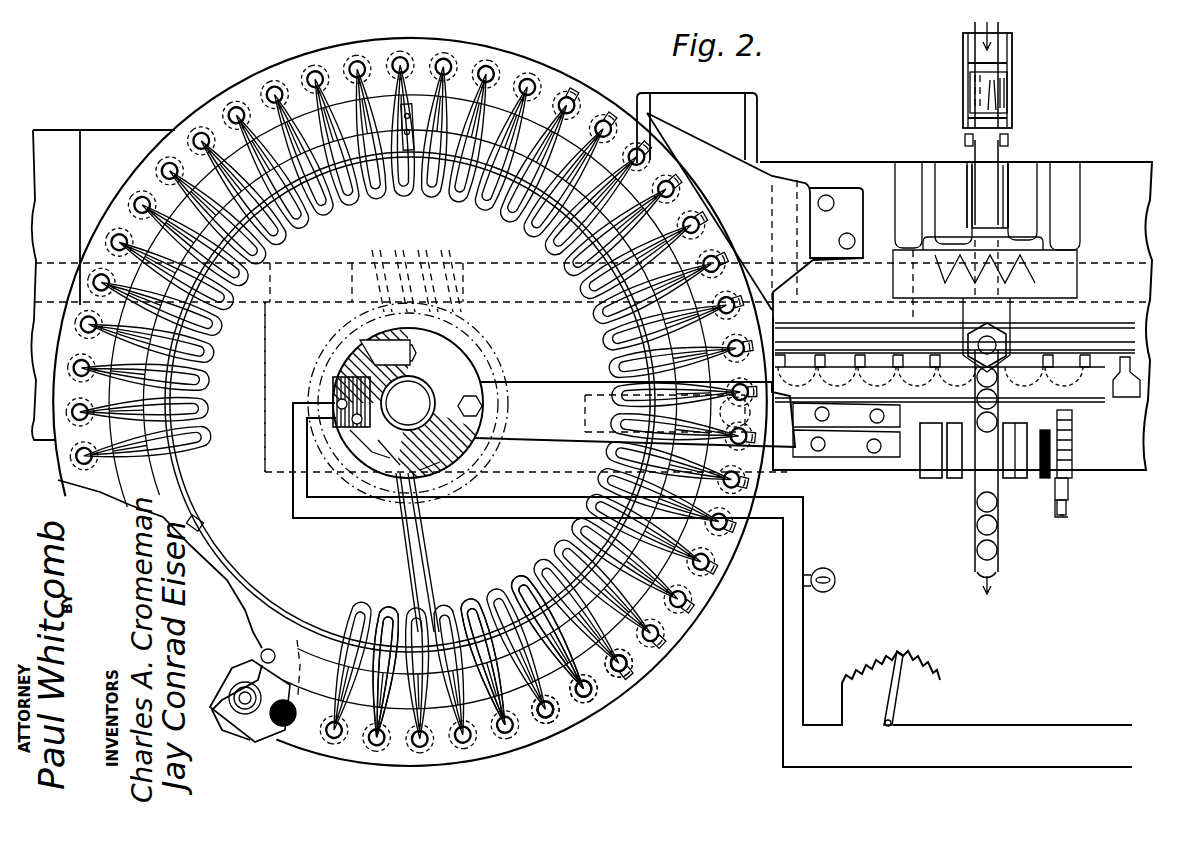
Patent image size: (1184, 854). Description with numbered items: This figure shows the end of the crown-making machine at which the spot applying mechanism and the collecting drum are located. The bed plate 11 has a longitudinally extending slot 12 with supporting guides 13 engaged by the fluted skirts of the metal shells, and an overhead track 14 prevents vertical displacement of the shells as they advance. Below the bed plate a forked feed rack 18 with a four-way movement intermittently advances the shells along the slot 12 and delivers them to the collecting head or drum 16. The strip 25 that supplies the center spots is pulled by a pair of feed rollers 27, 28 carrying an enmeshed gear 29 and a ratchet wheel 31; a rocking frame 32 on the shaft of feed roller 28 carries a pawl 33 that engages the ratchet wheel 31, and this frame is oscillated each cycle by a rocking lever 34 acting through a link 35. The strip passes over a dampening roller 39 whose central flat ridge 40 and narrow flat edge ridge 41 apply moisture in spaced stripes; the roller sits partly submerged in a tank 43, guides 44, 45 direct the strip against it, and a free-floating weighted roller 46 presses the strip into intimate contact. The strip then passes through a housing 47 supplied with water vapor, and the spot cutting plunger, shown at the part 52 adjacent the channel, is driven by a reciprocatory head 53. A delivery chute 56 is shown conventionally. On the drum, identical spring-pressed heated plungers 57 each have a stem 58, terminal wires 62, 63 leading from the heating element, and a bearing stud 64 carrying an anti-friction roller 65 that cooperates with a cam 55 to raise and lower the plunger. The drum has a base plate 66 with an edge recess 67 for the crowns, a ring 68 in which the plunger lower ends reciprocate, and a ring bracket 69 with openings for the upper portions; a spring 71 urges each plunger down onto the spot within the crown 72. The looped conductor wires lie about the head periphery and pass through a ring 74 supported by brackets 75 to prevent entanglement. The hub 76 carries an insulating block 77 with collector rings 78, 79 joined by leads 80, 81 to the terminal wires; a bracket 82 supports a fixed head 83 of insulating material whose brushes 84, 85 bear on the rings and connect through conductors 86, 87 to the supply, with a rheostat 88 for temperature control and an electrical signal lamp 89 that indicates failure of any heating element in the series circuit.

The bed plate 11 is at (1102, 193).
The longitudinally extending slot 12 is at (1137, 335).
The supporting guides 13 is at (838, 367).
The overhead track 14 is at (1097, 347).
The collecting head or drum 16 is at (332, 550).
The forked feed rack 18 is at (1112, 390).
The strip 25 is at (1002, 157).
The feed roller 27 is at (960, 480).
The feed roller 28 is at (1000, 480).
The gear 29 is at (1045, 430).
The ratchet wheel 31 is at (1067, 507).
The rocking frame 32 is at (1072, 440).
The pawl 33 is at (1073, 482).
The rocking lever 34 is at (1060, 517).
The link 35 is at (1067, 517).
The dampening roller 39 is at (1000, 100).
The central flat ridge 40 is at (1002, 72).
The narrow flat edge ridge 41 is at (1000, 90).
The tank 43 is at (1007, 48).
The guide 44 is at (975, 62).
The guide 45 is at (977, 118).
The weighted roller 46 is at (975, 100).
The housing 47 is at (967, 177).
The cam block 52 is at (1020, 343).
The reciprocatory head 53 is at (1013, 307).
The cam 55 is at (720, 177).
The delivery chute 56 is at (702, 108).
The plunger 57 is at (236, 117).
The stem 58 is at (580, 697).
The terminal wire 62 is at (338, 610).
The terminal wire 63 is at (354, 613).
The bearing stud 64 is at (627, 668).
The anti-friction roller 65 is at (619, 124).
The base plate 66 is at (250, 670).
The edge recess 67 is at (238, 708).
The ring 68 is at (277, 730).
The ring bracket 69 is at (291, 62).
The spring 71 is at (295, 727).
The crown 72 is at (250, 707).
The ring 74 is at (556, 217).
The bracket 75 is at (405, 150).
The hub 76 is at (482, 412).
The insulating block 77 is at (383, 445).
The collector ring 78 is at (425, 475).
The collector ring 79 is at (370, 430).
The lead 80 is at (412, 536).
The lead 81 is at (430, 536).
The bracket 82 is at (634, 414).
The fixed head 83 is at (356, 360).
The brush 84 is at (340, 403).
The brush 85 is at (383, 397).
The conductor 86 is at (318, 497).
The conductor 87 is at (293, 482).
The rheostat 88 is at (903, 665).
The electrical signal lamp 89 is at (838, 585).